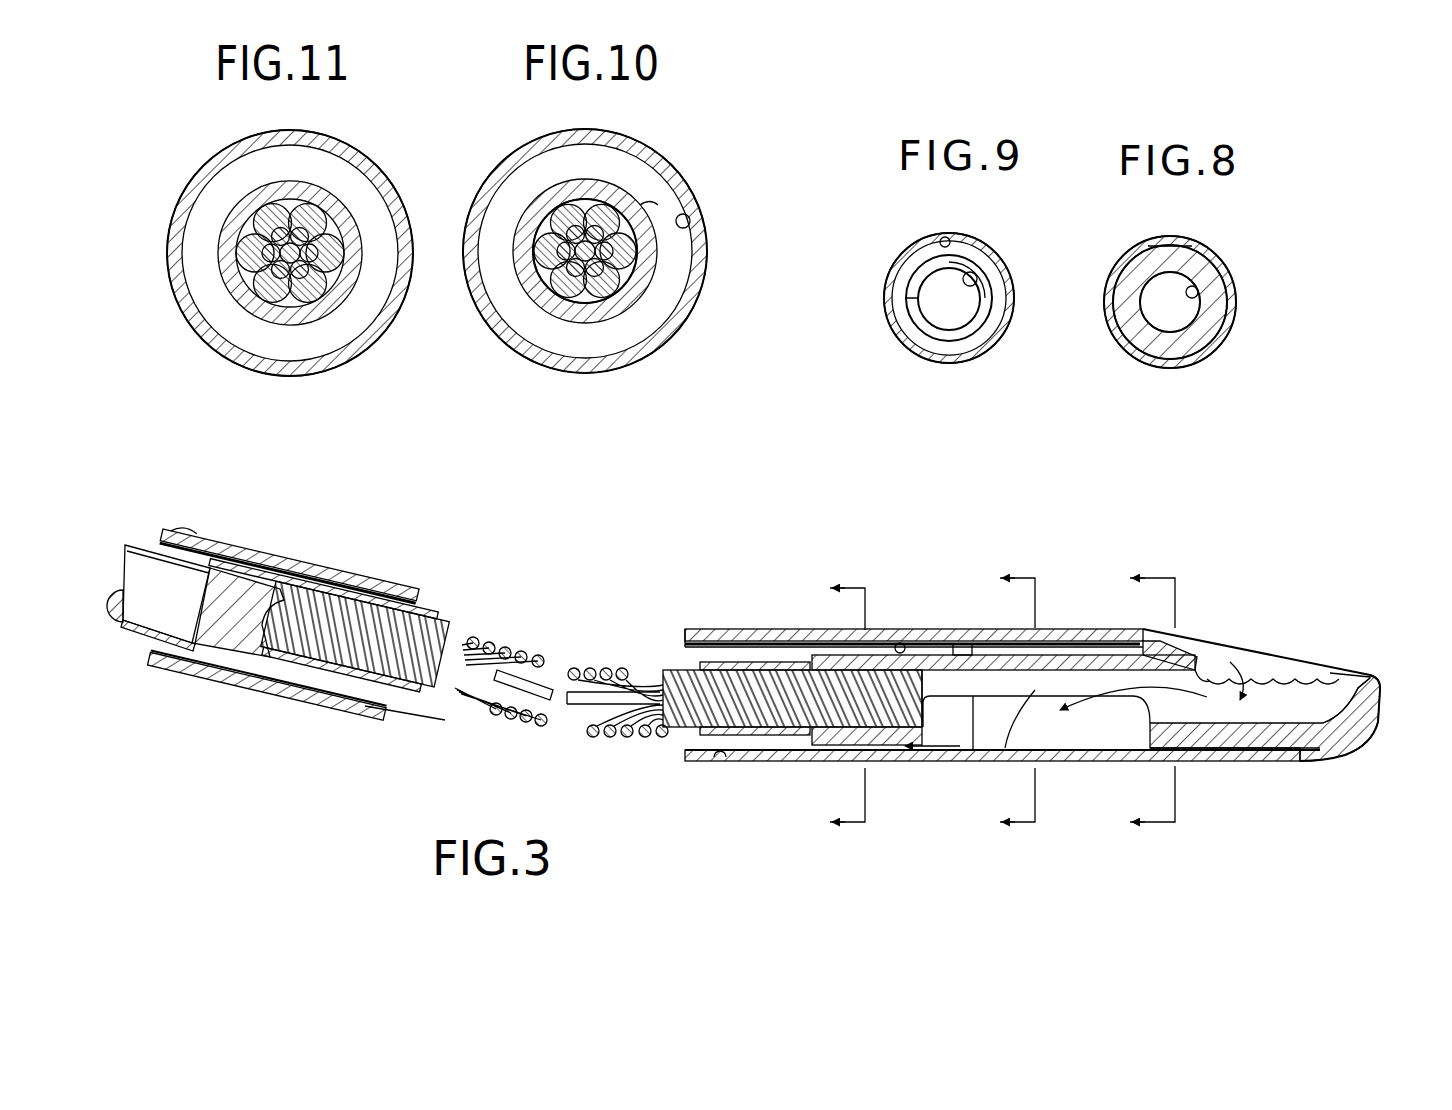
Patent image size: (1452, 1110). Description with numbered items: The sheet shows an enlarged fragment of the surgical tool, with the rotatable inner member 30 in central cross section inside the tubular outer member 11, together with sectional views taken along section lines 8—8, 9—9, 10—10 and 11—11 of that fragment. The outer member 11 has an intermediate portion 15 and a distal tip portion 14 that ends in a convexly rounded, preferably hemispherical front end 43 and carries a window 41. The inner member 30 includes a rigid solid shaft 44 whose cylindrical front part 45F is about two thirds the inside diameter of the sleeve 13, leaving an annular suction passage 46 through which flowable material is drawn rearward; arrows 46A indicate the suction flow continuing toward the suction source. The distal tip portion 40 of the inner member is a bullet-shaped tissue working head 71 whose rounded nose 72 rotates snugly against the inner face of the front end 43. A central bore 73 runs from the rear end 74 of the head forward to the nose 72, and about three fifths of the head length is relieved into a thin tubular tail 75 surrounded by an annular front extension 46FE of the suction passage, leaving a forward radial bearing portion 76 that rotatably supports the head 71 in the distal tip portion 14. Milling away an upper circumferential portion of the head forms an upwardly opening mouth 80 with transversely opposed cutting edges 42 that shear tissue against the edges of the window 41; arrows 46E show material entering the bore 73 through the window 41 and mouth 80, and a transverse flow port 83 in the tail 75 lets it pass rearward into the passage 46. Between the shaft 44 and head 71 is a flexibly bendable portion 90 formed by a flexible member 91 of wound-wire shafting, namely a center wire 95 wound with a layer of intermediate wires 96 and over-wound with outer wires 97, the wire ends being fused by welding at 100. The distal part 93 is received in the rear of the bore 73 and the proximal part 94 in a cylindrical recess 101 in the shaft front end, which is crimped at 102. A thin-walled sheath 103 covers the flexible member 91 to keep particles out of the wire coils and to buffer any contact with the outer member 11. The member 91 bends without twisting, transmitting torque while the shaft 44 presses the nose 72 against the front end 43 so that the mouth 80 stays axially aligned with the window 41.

In FIG. 3, the section line 8— 8 is at (1139, 700).
In FIG. 3, the section line 9— 9 is at (1005, 700).
In FIG. 3, the section line 10— 10 is at (830, 705).
In FIG. 11, the tubular outer member 11 is at (374, 162).
In FIG. 10, the tubular outer member 11 is at (578, 128).
In FIG. 9, the tubular outer member 11 is at (1008, 336).
In FIG. 8, the tubular outer member 11 is at (1226, 341).
In FIG. 3, the tubular outer member 11 is at (320, 557).
In FIG. 3, the sleeve 13 is at (346, 722).
In FIG. 10, the distal tip portion 14 is at (628, 108).
In FIG. 9, the distal tip portion 14 is at (990, 348).
In FIG. 8, the distal tip portion 14 is at (1200, 357).
In FIG. 3, the distal tip portion 14 is at (920, 764).
In FIG. 11, the intermediate portion 15 is at (325, 134).
In FIG. 3, the intermediate portion 15 is at (372, 722).
In FIG. 3, the rotatable inner member 30 is at (150, 534).
In FIG. 3, the distal tip portion 40 is at (1236, 658).
In FIG. 8, the window 41 is at (1186, 245).
In FIG. 3, the window 41 is at (1340, 684).
In FIG. 3, the cutting edge 42 is at (1378, 682).
In FIG. 3, the front end 43 is at (1362, 742).
In FIG. 3, the shaft 44 is at (192, 550).
In FIG. 11, the front part 45F is at (266, 200).
In FIG. 3, the front part 45F is at (130, 544).
In FIG. 3, the suction passage 46 is at (322, 690).
In FIG. 3, the arrows 46A is at (445, 722).
In FIG. 3, the arrows 46E is at (1226, 701).
In FIG. 10, the front extension 46FE is at (690, 222).
In FIG. 9, the front extension 46FE is at (946, 239).
In FIG. 3, the front extension 46FE is at (900, 642).
In FIG. 10, the tissue working head 71 is at (620, 214).
In FIG. 9, the tissue working head 71 is at (990, 284).
In FIG. 8, the tissue working head 71 is at (1214, 262).
In FIG. 3, the tissue working head 71 is at (1280, 763).
In FIG. 3, the nose 72 is at (1380, 724).
In FIG. 10, the central bore 73 is at (614, 200).
In FIG. 9, the central bore 73 is at (976, 272).
In FIG. 8, the central bore 73 is at (1200, 290).
In FIG. 3, the central bore 73 is at (1226, 746).
In FIG. 3, the rear end 74 is at (815, 738).
In FIG. 10, the tail 75 is at (652, 202).
In FIG. 9, the tail 75 is at (968, 256).
In FIG. 3, the tail 75 is at (962, 644).
In FIG. 8, the bearing portion 76 is at (1222, 305).
In FIG. 3, the bearing portion 76 is at (1166, 645).
In FIG. 3, the mouth 80 is at (1196, 652).
In FIG. 9, the flow port 83 is at (986, 304).
In FIG. 3, the flow port 83 is at (1148, 720).
In FIG. 11, the flexibly bendable portion 90 is at (242, 200).
In FIG. 10, the flexibly bendable portion 90 is at (522, 212).
In FIG. 3, the flexibly bendable portion 90 is at (509, 590).
In FIG. 3, the flexible member 91 is at (447, 634).
In FIG. 3, the distal part 93 is at (758, 670).
In FIG. 3, the proximal part 94 is at (380, 620).
In FIG. 3, the center wire 95 is at (548, 678).
In FIG. 3, the intermediate wound wires 96 is at (588, 670).
In FIG. 3, the outer wound wires 97 is at (522, 650).
In FIG. 3, the fused ends 100 is at (216, 598).
In FIG. 3, the cylindrical recess 101 is at (346, 612).
In FIG. 3, the crimp 102 is at (252, 690).
In FIG. 3, the sheath 103 is at (420, 612).